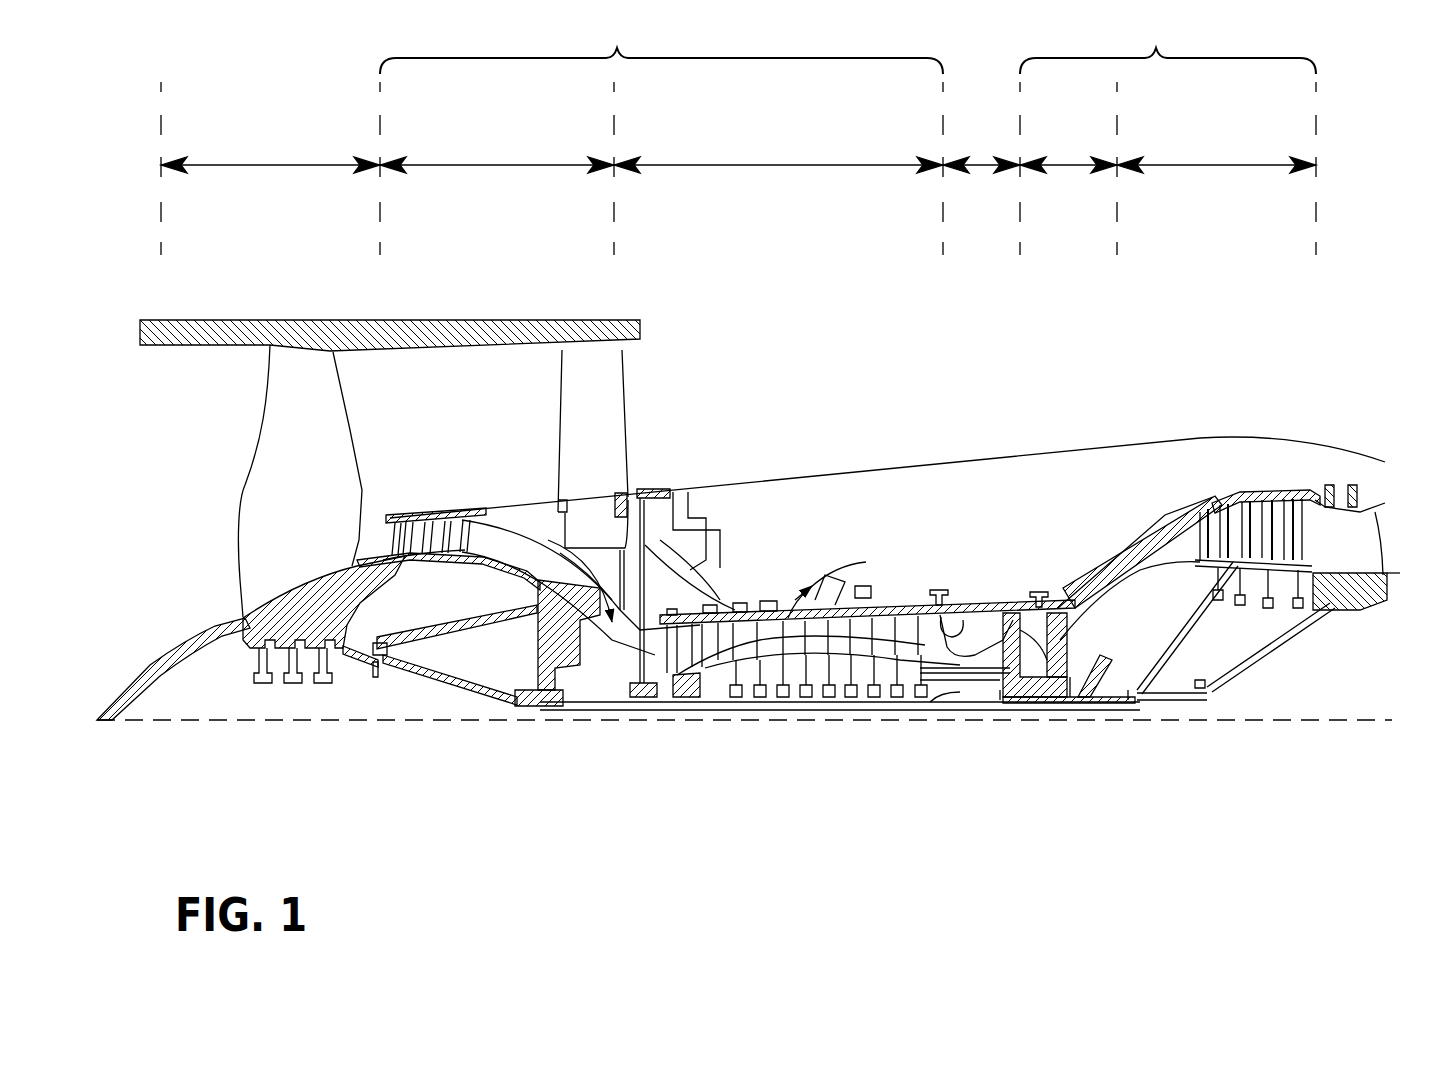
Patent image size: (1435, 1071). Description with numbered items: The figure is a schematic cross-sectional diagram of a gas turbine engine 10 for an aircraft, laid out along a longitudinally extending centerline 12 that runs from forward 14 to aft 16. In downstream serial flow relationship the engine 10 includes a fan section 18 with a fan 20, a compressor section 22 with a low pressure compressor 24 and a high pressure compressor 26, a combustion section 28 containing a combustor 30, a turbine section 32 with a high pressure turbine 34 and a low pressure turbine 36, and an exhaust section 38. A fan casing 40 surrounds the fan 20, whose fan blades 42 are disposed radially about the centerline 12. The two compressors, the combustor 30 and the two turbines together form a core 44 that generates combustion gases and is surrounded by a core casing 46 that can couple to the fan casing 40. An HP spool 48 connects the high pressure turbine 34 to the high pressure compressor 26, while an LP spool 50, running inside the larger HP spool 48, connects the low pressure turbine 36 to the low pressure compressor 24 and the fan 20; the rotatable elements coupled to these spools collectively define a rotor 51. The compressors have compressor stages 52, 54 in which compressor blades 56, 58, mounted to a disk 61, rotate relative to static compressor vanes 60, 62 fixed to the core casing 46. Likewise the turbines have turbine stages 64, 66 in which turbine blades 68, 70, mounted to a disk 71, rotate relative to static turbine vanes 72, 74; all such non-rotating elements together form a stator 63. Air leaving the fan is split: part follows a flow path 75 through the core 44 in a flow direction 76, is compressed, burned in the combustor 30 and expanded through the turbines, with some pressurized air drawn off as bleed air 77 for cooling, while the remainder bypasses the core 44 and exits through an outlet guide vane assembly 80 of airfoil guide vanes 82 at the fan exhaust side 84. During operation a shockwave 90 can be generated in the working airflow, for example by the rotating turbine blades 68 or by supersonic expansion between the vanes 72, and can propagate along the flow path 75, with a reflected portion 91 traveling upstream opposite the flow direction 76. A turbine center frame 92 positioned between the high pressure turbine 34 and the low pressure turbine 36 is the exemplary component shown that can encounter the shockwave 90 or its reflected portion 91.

The gas turbine engine 10 is at (972, 312).
The centerline 12 is at (271, 724).
The forward 14 is at (118, 468).
The aft 16 is at (1408, 584).
The fan section 18 is at (270, 168).
The fan 20 is at (213, 549).
The compressor section 22 is at (661, 45).
The low pressure compressor 24 is at (497, 168).
The high pressure compressor 26 is at (778, 168).
The combustion section 28 is at (981, 168).
The combustor 30 is at (986, 605).
The turbine section 32 is at (1168, 45).
The high pressure turbine 34 is at (1068, 168).
The low pressure turbine 36 is at (1216, 168).
The exhaust section 38 is at (1386, 513).
The fan casing 40 is at (428, 318).
The fan blades 42 is at (330, 404).
The core 44 is at (968, 492).
The core casing 46 is at (1170, 515).
The HP shaft or spool 48 is at (952, 706).
The LP shaft or spool 50 is at (542, 708).
The rotor 51 is at (1136, 704).
The compressor stages 52 is at (427, 486).
The compressor stages 54 is at (867, 600).
The compressor blades 56 is at (399, 516).
The compressor blades 58 is at (690, 598).
The static compressor vanes 60 is at (427, 506).
The disk 61 is at (692, 668).
The static compressor vanes 62 is at (682, 615).
The stator 63 is at (1240, 486).
The turbine stages 64 is at (1069, 590).
The turbine stages 66 is at (1005, 575).
The turbine blades 68 is at (1059, 563).
The turbine blades 70 is at (1297, 503).
The disk 71 is at (1040, 705).
The static turbine vanes 72 is at (1012, 600).
The static turbine vanes 74 is at (1280, 503).
The flow path 75 is at (1155, 562).
The flow direction 76 is at (632, 562).
The bleed air 77 is at (830, 574).
The outlet guide vane assembly 80 is at (645, 452).
The airfoil guide vanes 82 is at (565, 445).
The fan exhaust side 84 is at (676, 352).
The shockwave 90 is at (1088, 590).
The reflected portion 91 is at (1075, 704).
The turbine center frame 92 is at (1158, 512).